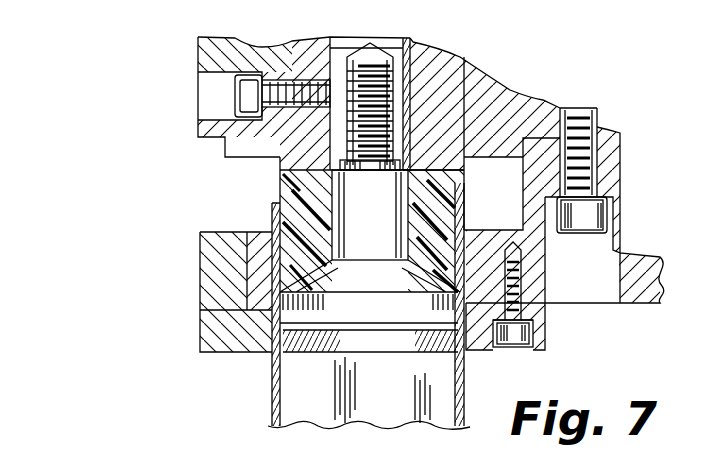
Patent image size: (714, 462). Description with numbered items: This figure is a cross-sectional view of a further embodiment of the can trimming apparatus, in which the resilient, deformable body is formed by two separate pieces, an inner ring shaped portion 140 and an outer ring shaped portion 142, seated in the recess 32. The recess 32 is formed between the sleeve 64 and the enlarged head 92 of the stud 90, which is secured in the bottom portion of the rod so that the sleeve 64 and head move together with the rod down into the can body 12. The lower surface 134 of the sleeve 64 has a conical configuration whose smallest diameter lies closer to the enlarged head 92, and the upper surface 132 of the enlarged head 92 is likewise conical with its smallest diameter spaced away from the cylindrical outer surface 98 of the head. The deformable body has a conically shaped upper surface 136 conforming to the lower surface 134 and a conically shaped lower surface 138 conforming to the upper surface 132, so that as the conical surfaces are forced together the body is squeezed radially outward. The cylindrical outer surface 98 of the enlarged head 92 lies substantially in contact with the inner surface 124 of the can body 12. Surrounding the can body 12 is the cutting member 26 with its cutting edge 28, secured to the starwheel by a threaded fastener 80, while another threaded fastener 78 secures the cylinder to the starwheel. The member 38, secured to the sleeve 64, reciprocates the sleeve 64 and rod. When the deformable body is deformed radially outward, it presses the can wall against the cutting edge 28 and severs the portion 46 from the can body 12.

The can body 12 is at (272, 401).
The cutting member 26 is at (197, 333).
The cutting edge 28 is at (250, 240).
The recess 32 is at (130, 170).
The member 38 is at (197, 52).
The portion 46 is at (262, 230).
The sleeve 64 is at (445, 111).
The threaded fastener 78 is at (598, 160).
The threaded fastener 80 is at (525, 300).
The stud 90 is at (383, 230).
The enlarged head 92 is at (347, 318).
The cylindrical outer surface 98 is at (452, 356).
The inner surface 124 is at (468, 362).
The upper surface 132 is at (316, 274).
The lower surface 134 is at (292, 186).
The conically shaped upper surface 136 is at (278, 205).
The conically shaped lower surface 138 is at (296, 264).
The inner ring shaped portion 140 is at (300, 210).
The outer ring shaped portion 142 is at (306, 198).